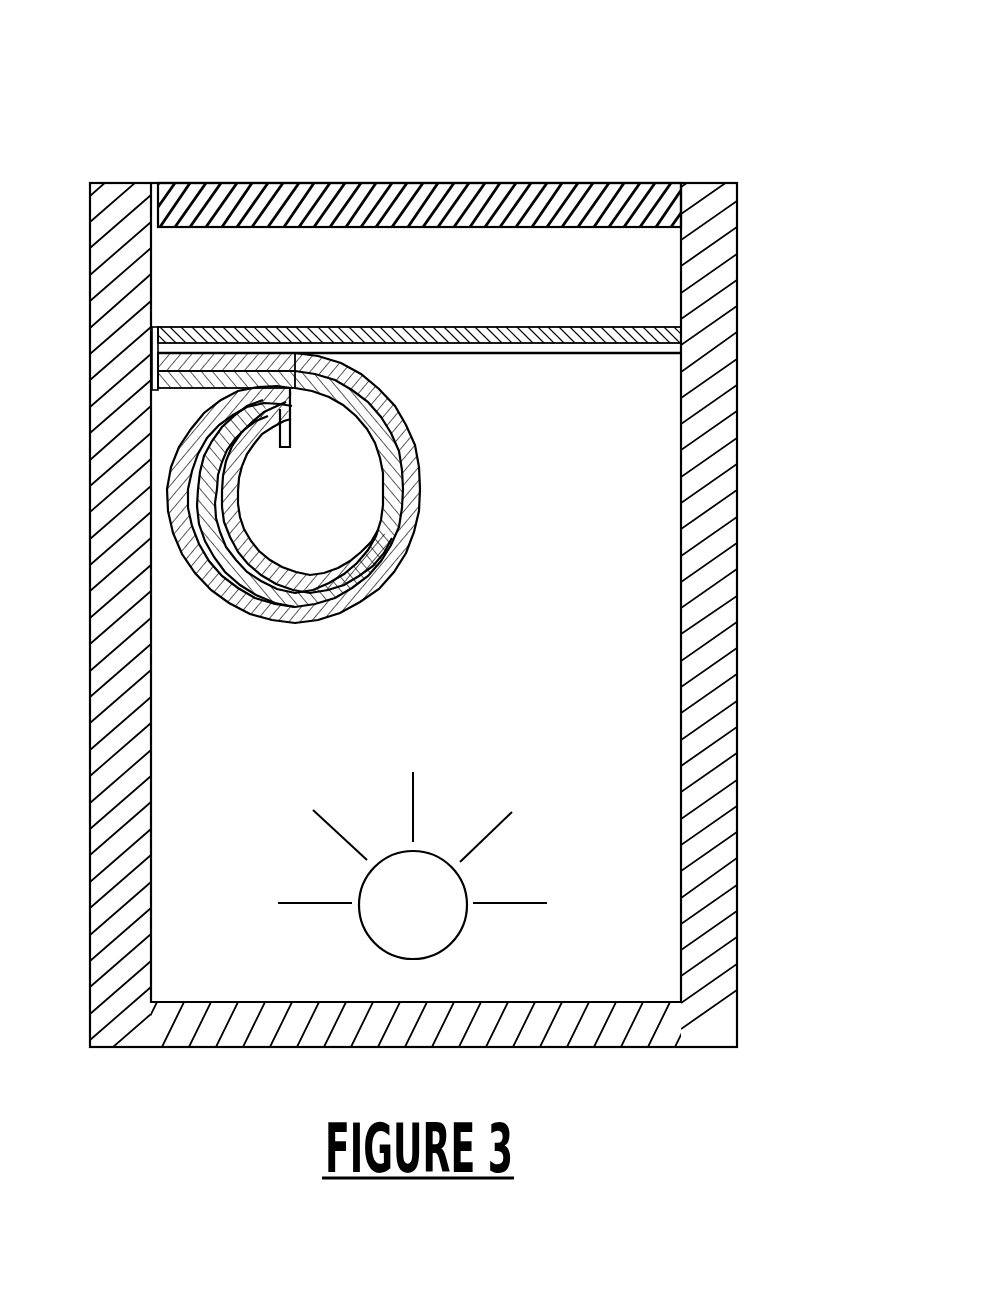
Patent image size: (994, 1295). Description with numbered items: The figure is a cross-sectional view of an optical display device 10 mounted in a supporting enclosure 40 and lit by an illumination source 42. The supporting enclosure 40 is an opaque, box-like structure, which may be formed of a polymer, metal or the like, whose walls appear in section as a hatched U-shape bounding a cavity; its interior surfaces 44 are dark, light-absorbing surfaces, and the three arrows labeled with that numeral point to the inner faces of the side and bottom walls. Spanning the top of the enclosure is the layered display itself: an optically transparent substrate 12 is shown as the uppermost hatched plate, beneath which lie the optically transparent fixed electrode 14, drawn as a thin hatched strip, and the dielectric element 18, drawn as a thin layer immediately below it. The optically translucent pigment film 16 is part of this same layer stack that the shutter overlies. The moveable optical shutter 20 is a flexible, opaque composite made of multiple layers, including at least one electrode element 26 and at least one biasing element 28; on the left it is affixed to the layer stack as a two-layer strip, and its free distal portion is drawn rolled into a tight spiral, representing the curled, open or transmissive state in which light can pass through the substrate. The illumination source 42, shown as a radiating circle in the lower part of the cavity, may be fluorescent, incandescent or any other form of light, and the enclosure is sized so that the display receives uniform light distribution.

The optical display device 10 is at (83, 147).
The optically transparent substrate 12 is at (612, 276).
The optically transparent fixed electrode 14 is at (681, 331).
The optically translucent pigment film 16 is at (457, 197).
The dielectric element 18 is at (647, 350).
The moveable optical shutter 20 is at (313, 622).
The electrode element 26 is at (175, 363).
The biasing element 28 is at (165, 383).
The supporting enclosure 40 is at (720, 693).
The illumination source 42 is at (423, 913).
The interior surfaces 44 is at (681, 710).